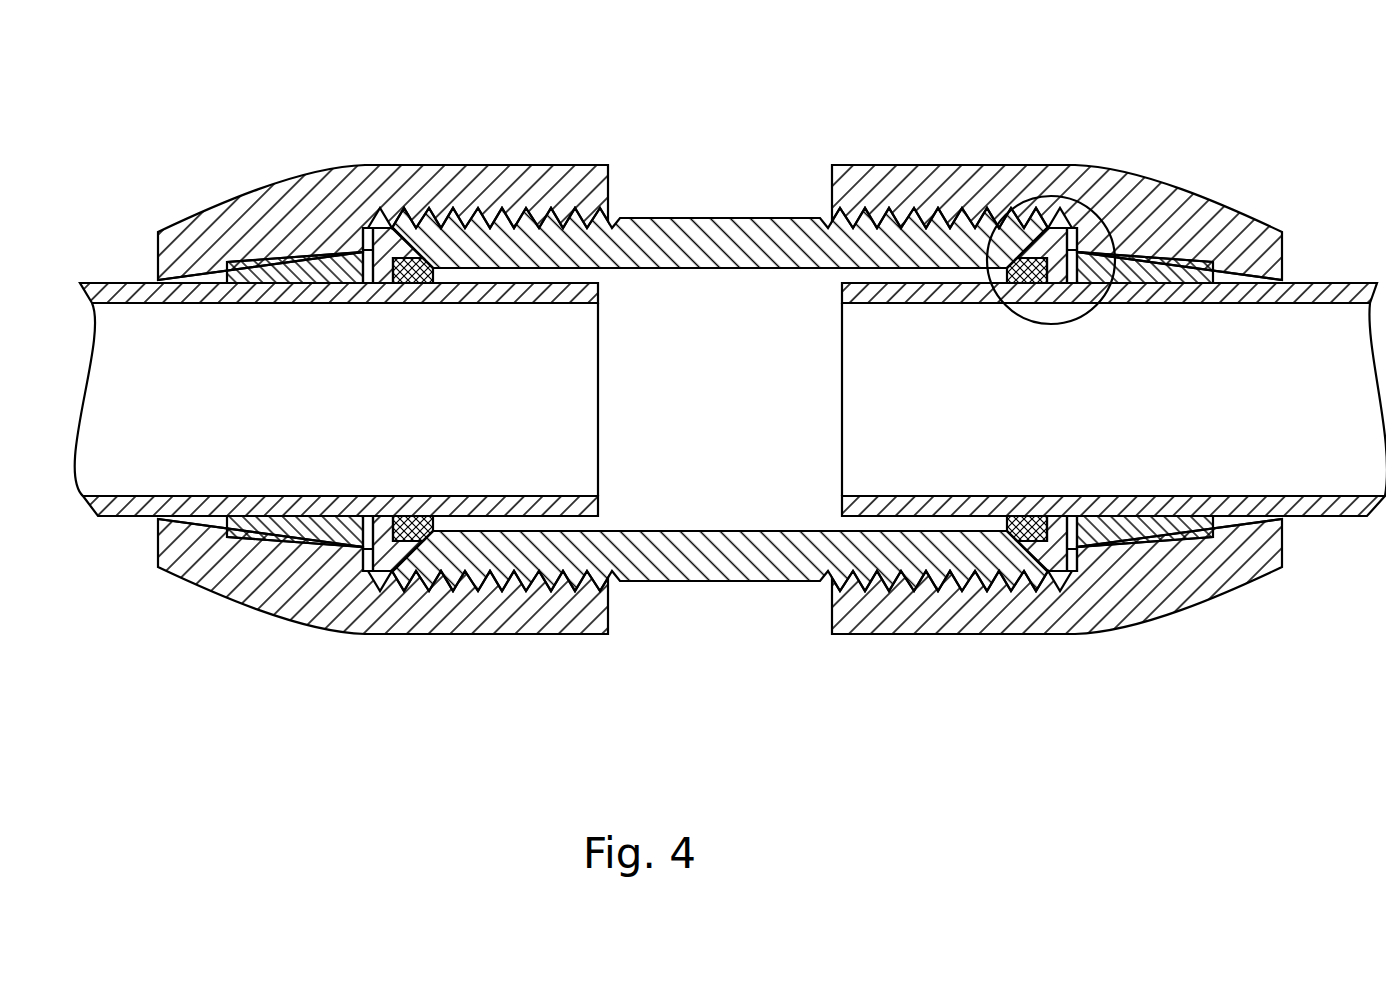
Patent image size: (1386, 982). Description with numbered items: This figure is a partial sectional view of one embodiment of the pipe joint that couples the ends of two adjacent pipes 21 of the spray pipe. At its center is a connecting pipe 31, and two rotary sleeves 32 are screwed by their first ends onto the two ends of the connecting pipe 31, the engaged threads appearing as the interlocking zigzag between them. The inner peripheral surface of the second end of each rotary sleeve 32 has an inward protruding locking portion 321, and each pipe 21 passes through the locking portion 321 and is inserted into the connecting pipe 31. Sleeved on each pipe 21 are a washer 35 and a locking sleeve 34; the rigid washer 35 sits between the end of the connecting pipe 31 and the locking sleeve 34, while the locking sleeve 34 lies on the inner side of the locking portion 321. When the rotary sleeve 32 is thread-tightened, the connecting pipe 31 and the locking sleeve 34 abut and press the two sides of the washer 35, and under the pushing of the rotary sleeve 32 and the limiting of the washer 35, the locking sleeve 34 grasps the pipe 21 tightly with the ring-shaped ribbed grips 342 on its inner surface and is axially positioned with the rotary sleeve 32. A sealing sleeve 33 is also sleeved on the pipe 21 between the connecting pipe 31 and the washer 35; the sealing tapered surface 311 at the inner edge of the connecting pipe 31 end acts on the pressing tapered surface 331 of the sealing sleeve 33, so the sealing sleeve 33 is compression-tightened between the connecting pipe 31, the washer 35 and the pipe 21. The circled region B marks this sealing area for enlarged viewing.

The pipe 21 is at (190, 503).
The connecting pipe 31 is at (720, 245).
The sealing tapered surface 311 is at (407, 240).
The rotary sleeve 32 is at (895, 192).
The locking portion 321 is at (1233, 268).
The sealing sleeve 33 is at (410, 520).
The pressing tapered surface 331 is at (437, 266).
The locking sleeve 34 is at (260, 273).
The ribbed grip 342 is at (328, 520).
The washer 35 is at (383, 248).
The detail view B is at (1042, 196).